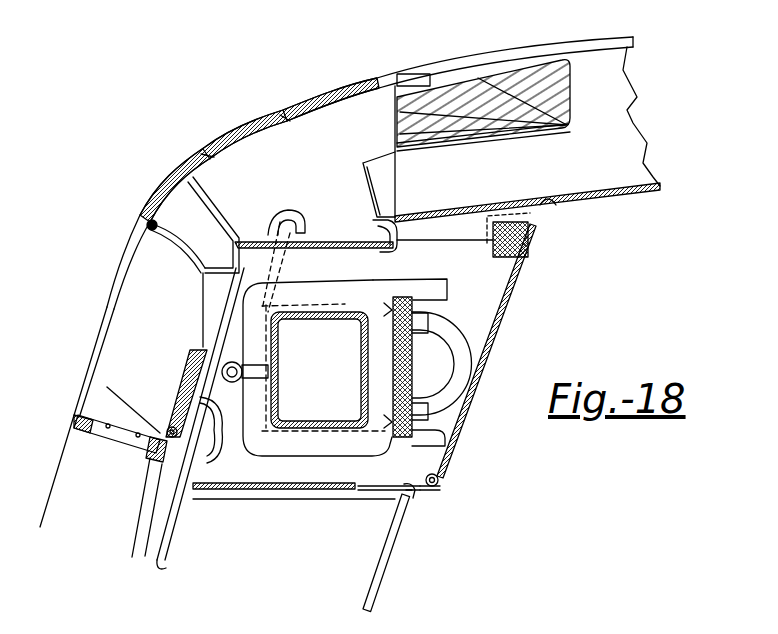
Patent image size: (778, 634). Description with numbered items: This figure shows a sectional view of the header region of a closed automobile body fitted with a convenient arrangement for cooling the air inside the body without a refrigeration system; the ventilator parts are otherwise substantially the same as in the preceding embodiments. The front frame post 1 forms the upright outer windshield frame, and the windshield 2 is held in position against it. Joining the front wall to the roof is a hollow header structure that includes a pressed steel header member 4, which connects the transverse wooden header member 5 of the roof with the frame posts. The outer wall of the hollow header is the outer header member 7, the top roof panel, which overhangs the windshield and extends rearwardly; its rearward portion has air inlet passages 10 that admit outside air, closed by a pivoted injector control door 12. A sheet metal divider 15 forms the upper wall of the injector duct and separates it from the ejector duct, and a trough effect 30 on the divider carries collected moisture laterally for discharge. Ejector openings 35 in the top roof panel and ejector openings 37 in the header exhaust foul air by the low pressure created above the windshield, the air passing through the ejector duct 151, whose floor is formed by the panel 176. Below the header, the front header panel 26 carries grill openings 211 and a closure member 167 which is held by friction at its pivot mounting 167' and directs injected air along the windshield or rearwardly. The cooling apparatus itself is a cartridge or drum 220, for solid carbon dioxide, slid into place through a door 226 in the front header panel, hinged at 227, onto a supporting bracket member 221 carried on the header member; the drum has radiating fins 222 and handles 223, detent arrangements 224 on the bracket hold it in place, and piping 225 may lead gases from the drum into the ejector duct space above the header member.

The front frame post 1 is at (63, 450).
The windshield 2 is at (137, 522).
The header member 4 is at (394, 250).
The transverse wooden header member 5 is at (578, 86).
The outer header member 7 is at (127, 262).
The air inlet passages 10 is at (112, 437).
The injector control door 12 is at (192, 378).
The divider 15 is at (218, 203).
The front header panel 26 is at (438, 486).
The trough effect 30 is at (216, 250).
The ejector openings 35 is at (240, 133).
The ejector openings in the header 37 is at (372, 174).
The ejector duct 151 is at (527, 143).
The closure member 167 is at (403, 553).
The pivot mounting 167' is at (436, 503).
The panel 176 is at (556, 210).
The grill openings 211 is at (243, 500).
The cartridge or drum 220 is at (319, 370).
The supporting bracket member 221 is at (447, 291).
The radiating fins 222 is at (296, 456).
The handles 223 is at (462, 354).
The detent arrangements 224 is at (378, 312).
The piping 225 is at (262, 315).
The door 226 is at (517, 308).
The hinge 227 is at (452, 446).